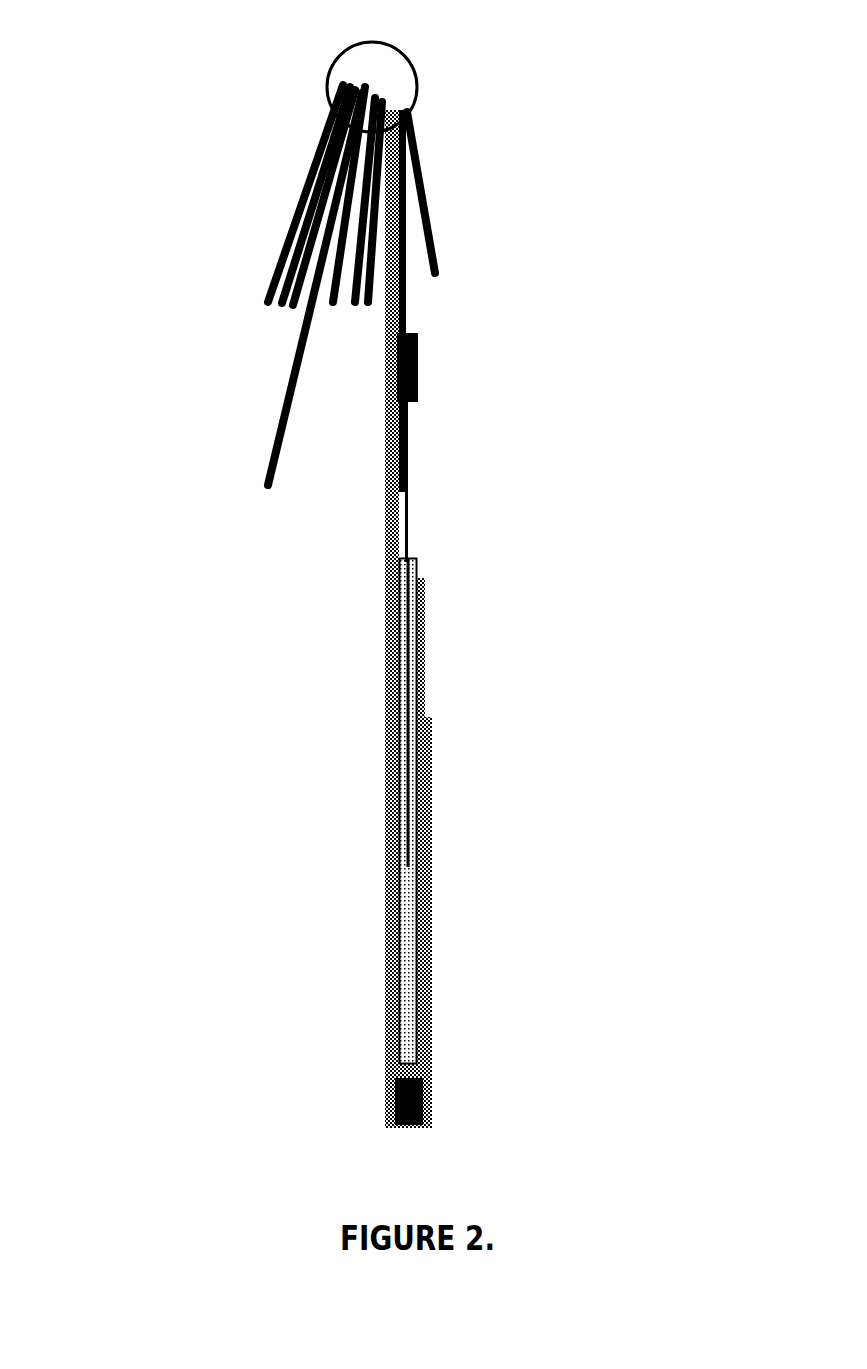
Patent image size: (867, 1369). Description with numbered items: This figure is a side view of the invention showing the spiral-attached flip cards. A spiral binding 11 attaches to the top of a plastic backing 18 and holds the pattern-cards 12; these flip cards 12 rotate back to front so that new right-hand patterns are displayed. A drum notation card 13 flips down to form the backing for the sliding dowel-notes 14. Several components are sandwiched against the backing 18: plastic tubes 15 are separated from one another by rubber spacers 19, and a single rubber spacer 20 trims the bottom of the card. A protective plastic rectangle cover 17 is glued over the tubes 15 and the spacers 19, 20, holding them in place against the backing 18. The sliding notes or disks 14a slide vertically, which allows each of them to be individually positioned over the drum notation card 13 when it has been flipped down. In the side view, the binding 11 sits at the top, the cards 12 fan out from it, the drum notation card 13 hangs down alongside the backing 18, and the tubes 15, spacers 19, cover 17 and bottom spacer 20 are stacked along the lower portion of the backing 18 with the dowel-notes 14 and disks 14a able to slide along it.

The spiral binding 11 is at (412, 67).
The pattern-cards 12 is at (285, 236).
The drum notation card 13 is at (285, 372).
The sliding dowel-notes 14 is at (423, 510).
The sliding notes or disks 14a is at (433, 377).
The plastic tubes 15 is at (425, 693).
The protective plastic rectangle cover 17 is at (438, 912).
The plastic backing 18 is at (387, 1053).
The rubber spacers 19 is at (442, 1005).
The single rubber spacer 20 is at (433, 1102).